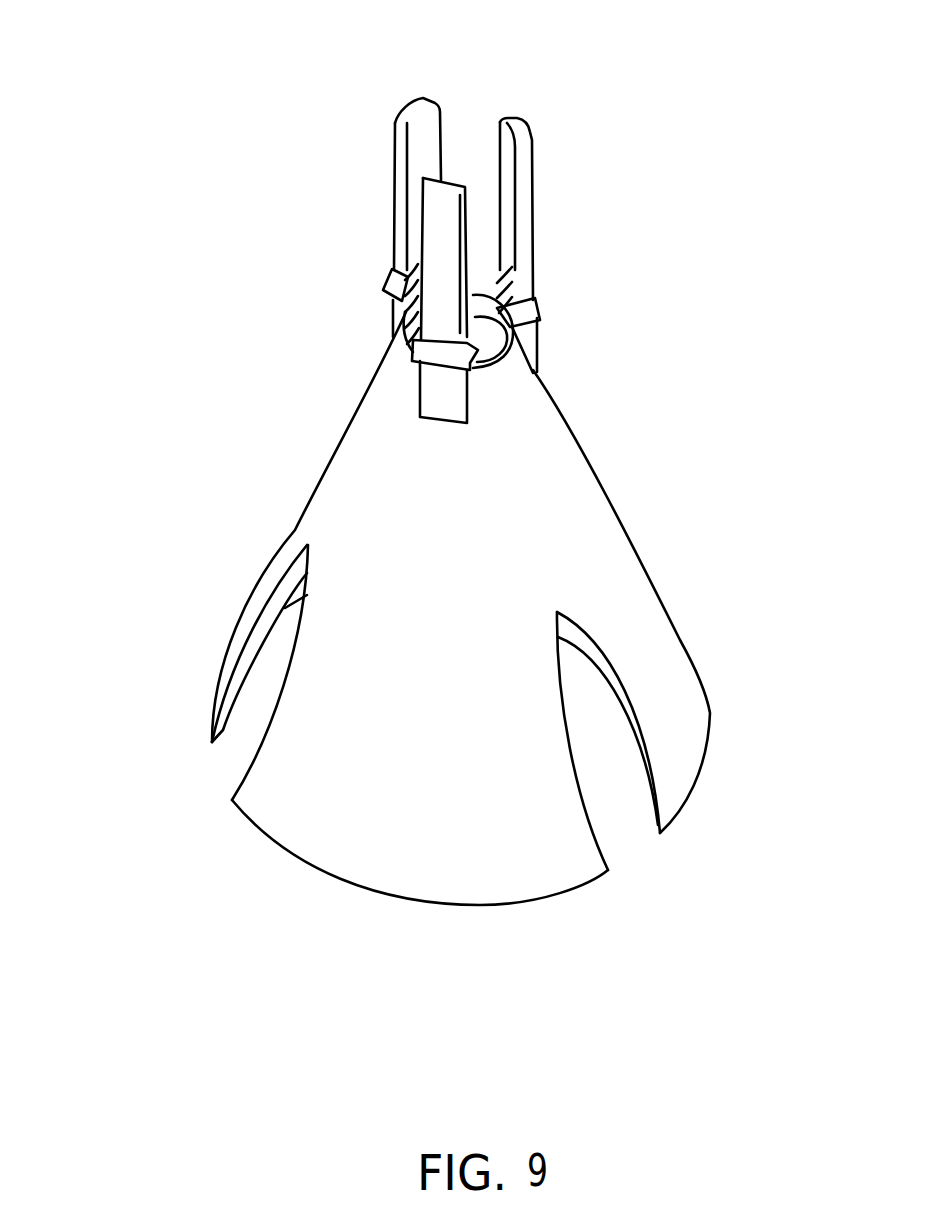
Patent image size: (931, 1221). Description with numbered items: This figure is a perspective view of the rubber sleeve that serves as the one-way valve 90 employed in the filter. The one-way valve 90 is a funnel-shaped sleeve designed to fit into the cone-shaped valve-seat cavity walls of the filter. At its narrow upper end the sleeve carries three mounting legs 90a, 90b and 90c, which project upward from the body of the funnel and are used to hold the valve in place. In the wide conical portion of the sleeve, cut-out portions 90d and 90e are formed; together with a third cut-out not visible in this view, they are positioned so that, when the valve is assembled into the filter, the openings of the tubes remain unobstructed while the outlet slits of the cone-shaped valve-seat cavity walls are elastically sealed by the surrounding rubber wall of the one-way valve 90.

The one-way valve 90 is at (647, 575).
The mounting leg 90a is at (530, 230).
The mounting leg 90b is at (413, 125).
The mounting leg 90c is at (435, 323).
The cut-out portion 90d is at (623, 832).
The cut-out portion 90e is at (243, 740).